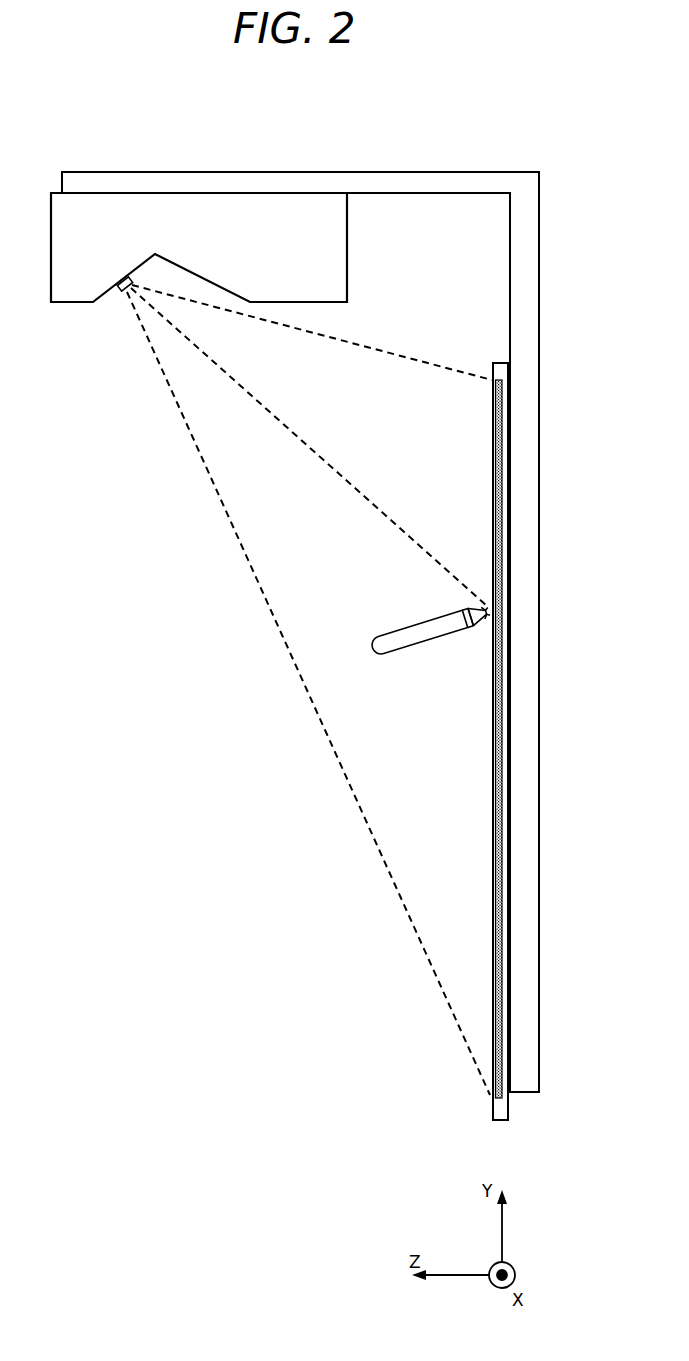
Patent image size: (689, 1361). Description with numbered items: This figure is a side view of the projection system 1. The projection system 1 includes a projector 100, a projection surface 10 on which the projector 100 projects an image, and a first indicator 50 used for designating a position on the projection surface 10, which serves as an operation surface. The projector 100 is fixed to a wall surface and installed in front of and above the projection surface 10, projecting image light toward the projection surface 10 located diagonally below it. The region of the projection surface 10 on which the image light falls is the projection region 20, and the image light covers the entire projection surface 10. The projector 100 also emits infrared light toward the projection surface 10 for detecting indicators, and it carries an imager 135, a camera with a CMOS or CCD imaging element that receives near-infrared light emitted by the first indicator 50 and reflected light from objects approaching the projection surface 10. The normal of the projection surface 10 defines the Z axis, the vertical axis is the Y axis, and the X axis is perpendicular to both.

The projection system 1 is at (446, 149).
The projection surface 10 is at (500, 368).
The projection region 20 is at (493, 430).
The first indicator 50 is at (403, 654).
The projector 100 is at (330, 251).
The imager 135 is at (119, 291).